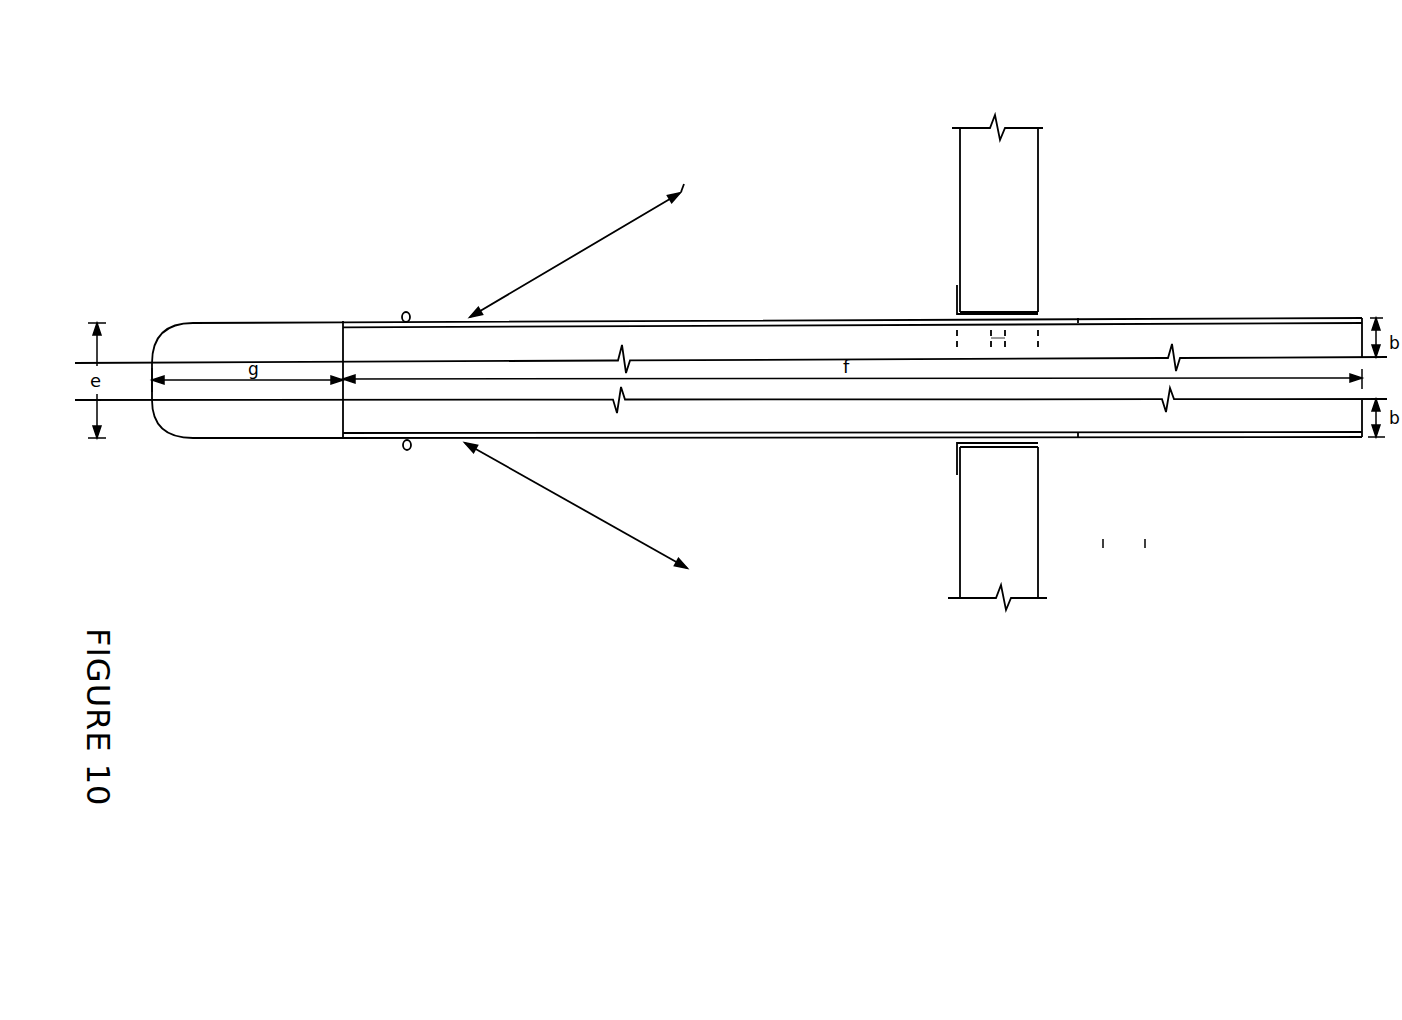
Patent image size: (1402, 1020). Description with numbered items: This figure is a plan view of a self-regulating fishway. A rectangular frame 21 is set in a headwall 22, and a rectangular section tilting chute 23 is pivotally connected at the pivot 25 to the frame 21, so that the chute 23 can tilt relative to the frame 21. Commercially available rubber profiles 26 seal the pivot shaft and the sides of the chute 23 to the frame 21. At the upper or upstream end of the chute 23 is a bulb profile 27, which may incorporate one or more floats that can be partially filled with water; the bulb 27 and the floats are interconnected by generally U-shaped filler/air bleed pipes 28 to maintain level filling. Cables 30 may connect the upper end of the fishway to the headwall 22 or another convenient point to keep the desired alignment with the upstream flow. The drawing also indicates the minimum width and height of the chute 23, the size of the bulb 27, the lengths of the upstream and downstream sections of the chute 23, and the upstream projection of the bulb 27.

The rectangular frame 21 is at (955, 465).
The headwall 22 is at (1040, 486).
The tilting chute 23 is at (805, 418).
The pivot 25 is at (998, 342).
The rubber profiles 26 is at (993, 316).
The bulb profile 27 is at (222, 425).
The filler/air bleed pipes 28 is at (398, 313).
The cables 30 is at (560, 262).